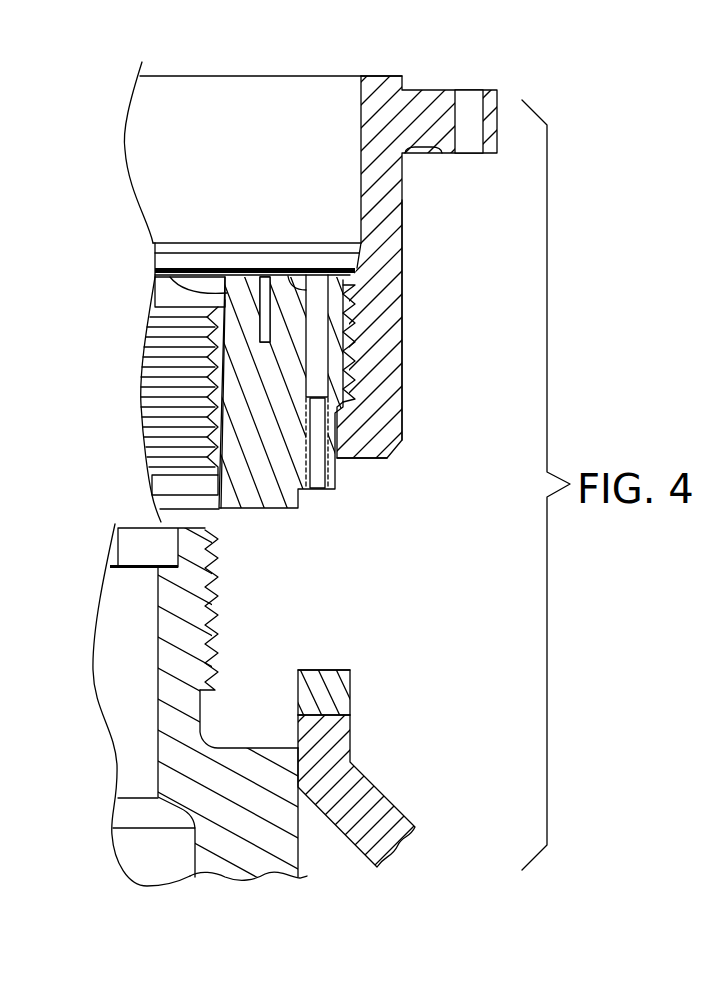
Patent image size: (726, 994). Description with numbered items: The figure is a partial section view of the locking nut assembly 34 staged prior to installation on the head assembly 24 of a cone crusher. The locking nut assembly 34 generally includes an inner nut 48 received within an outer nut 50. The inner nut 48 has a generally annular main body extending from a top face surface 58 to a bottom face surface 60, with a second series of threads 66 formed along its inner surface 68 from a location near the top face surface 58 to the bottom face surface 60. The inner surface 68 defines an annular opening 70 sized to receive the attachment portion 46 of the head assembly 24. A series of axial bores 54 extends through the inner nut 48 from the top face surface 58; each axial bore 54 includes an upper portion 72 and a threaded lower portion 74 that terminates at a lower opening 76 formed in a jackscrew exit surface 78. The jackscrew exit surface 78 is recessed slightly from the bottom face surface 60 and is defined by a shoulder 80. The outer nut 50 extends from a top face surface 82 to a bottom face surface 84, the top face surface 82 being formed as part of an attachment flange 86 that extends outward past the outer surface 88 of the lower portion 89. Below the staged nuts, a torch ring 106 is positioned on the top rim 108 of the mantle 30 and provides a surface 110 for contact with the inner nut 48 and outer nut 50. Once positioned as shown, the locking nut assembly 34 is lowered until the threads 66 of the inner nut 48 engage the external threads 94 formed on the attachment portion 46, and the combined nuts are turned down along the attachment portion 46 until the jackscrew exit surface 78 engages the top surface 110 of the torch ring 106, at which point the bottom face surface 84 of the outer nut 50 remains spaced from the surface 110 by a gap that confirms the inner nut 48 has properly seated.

The head assembly 24 is at (229, 718).
The mantle 30 is at (372, 797).
The locking nut assembly 34 is at (457, 494).
The attachment portion 46 is at (200, 707).
The inner nut 48 is at (264, 196).
The outer nut 50 is at (363, 273).
The axial bores 54 is at (285, 275).
The top face surface 58 is at (247, 273).
The bottom face surface 60 is at (288, 418).
The second series of threads 66 is at (172, 367).
The inner surface 68 is at (168, 272).
The annular opening 70 is at (177, 332).
The upper portion 72 is at (333, 375).
The threaded lower portion 74 is at (300, 450).
The lower opening 76 is at (322, 491).
The jackscrew exit surface 78 is at (315, 491).
The shoulder 80 is at (303, 491).
The top face surface 82 is at (365, 75).
The bottom face surface 84 is at (366, 460).
The attachment flange 86 is at (498, 110).
The outer surface 88 is at (402, 293).
The lower portion 89 is at (383, 383).
The external threads 94 is at (213, 610).
The torch ring 106 is at (353, 656).
The top rim 108 is at (337, 712).
The surface 110 is at (308, 668).